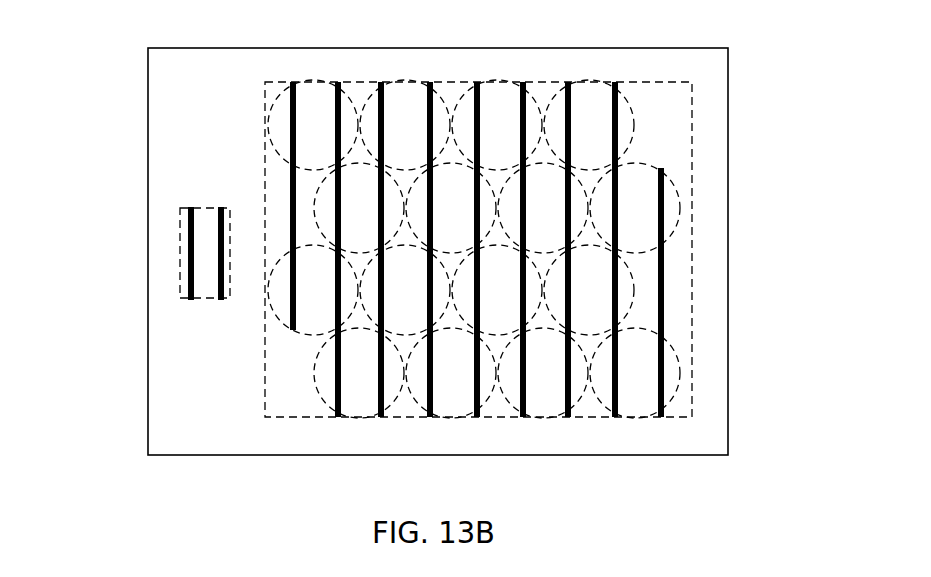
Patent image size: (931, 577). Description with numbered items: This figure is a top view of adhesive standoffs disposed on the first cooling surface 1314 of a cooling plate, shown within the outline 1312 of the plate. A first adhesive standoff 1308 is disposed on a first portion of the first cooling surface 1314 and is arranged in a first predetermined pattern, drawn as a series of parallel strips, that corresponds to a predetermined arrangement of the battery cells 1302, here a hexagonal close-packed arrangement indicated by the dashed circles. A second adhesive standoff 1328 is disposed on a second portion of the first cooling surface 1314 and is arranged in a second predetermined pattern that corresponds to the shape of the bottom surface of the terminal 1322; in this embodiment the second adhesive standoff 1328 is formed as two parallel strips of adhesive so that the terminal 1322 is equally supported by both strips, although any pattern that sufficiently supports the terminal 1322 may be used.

The substrate 1312 is at (729, 56).
The first cooling surface 1314 is at (708, 139).
The battery cells 1302 is at (679, 212).
The first adhesive standoff 1308 is at (664, 278).
The terminal 1322 is at (182, 222).
The second adhesive standoff 1328 is at (189, 300).